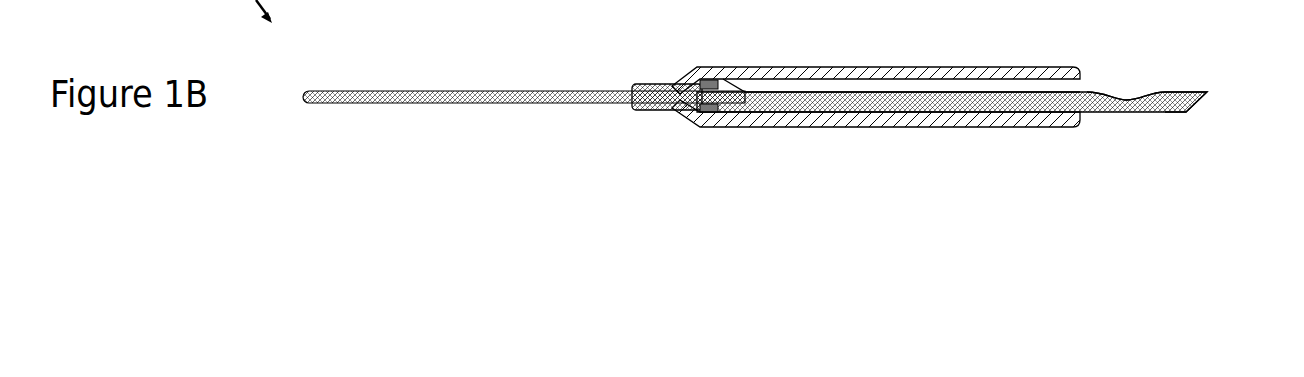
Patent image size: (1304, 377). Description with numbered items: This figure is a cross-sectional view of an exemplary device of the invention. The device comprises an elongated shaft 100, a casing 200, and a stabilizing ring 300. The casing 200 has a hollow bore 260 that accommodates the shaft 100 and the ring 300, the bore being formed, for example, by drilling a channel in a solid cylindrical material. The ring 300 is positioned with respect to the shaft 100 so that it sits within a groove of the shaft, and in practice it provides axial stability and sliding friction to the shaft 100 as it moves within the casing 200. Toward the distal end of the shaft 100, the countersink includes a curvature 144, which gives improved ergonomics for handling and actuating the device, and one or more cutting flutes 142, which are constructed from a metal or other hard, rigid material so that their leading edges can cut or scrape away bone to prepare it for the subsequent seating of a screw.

The elongated shaft 100 is at (510, 103).
The stabilizing ring 300 is at (717, 112).
The casing 200 is at (908, 124).
The hollow bore 260 is at (836, 78).
The curvature 144 is at (1128, 100).
The cutting flutes 142 is at (1195, 105).